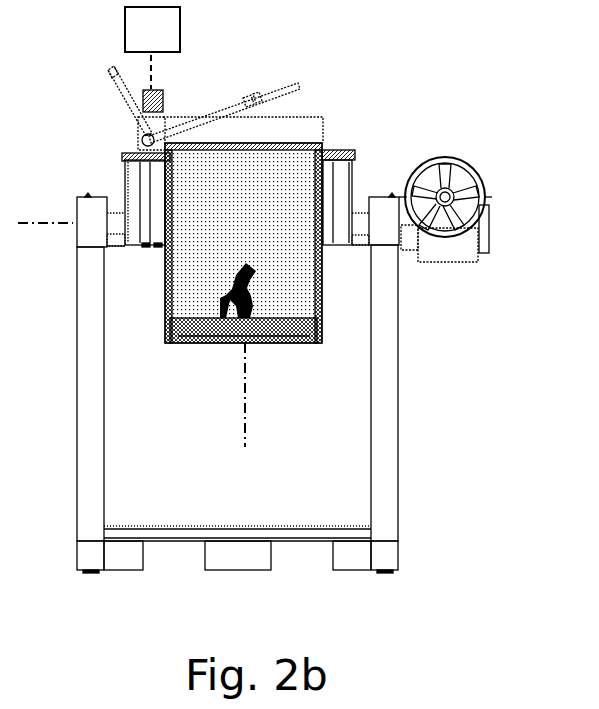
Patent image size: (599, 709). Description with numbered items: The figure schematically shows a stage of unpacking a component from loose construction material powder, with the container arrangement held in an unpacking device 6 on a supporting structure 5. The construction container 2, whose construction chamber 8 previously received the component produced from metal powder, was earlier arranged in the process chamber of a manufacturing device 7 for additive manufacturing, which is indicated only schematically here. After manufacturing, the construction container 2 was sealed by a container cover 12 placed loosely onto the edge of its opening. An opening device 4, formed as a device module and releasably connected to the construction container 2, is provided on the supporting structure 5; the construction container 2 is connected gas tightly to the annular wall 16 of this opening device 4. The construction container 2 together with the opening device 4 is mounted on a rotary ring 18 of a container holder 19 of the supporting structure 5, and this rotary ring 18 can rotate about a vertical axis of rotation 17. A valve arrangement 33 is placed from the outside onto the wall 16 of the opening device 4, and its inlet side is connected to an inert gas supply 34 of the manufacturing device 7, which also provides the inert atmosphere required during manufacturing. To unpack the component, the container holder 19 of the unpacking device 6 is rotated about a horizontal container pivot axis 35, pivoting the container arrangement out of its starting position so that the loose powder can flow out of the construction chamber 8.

The construction container 2 is at (187, 350).
The opening device 4 is at (127, 138).
The supporting structure 5 is at (404, 373).
The unpacking device 6 is at (321, 97).
The manufacturing device 7 is at (435, 6).
The construction chamber 8 is at (255, 231).
The container cover 12 is at (249, 150).
The annular wall 16 is at (323, 127).
The vertical axis of rotation 17 is at (259, 399).
The rotary ring 18 is at (330, 148).
The container holder 19 is at (127, 177).
The valve arrangement 33 is at (160, 96).
The inert gas supply 34 is at (166, 44).
The horizontal container pivot axis 35 is at (38, 236).